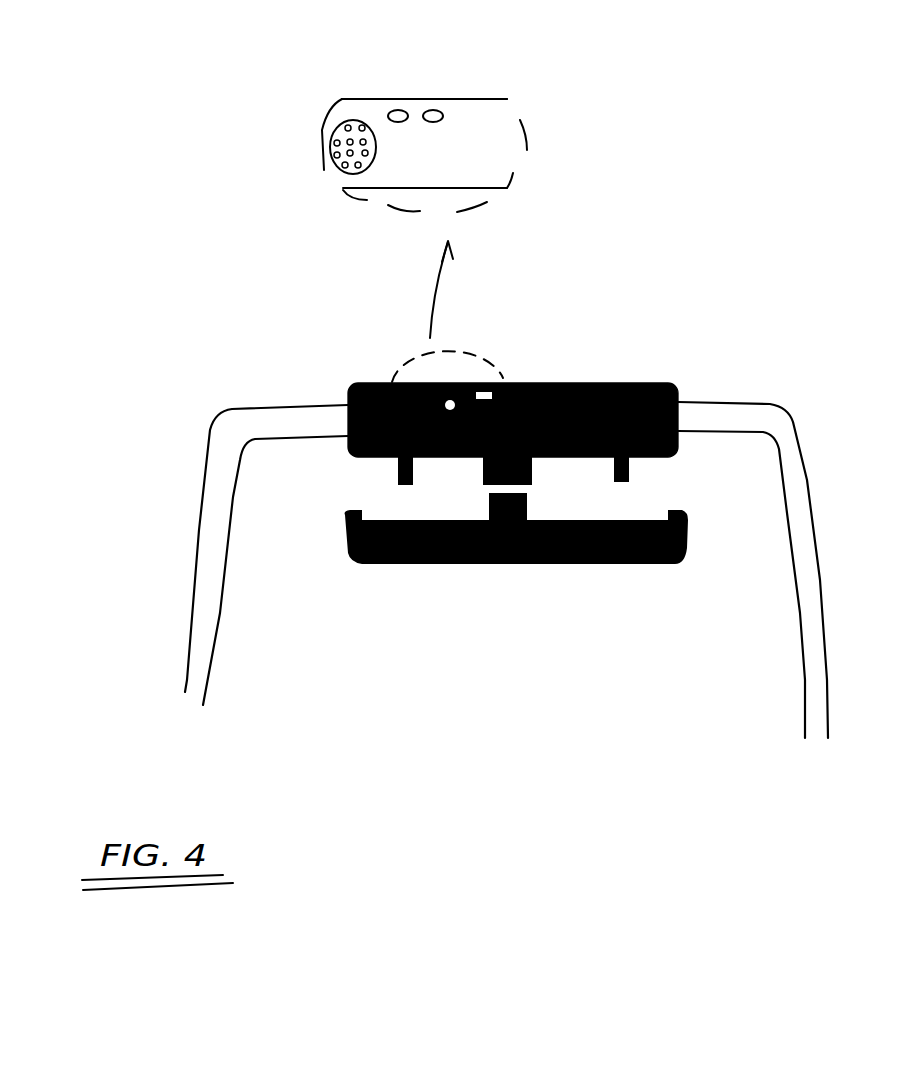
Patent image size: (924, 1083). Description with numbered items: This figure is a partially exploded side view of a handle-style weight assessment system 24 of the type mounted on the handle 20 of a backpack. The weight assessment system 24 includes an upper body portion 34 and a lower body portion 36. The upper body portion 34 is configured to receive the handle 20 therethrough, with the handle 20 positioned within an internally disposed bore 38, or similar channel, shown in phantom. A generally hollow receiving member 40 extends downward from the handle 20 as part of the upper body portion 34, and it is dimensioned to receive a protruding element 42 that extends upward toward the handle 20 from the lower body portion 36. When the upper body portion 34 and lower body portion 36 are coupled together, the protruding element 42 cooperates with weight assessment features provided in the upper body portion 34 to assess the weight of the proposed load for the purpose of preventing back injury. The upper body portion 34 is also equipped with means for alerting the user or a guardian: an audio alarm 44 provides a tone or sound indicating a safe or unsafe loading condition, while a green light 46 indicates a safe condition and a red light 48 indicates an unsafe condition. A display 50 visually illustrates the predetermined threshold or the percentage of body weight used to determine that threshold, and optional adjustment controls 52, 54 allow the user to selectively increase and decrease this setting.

The handle 20 is at (789, 448).
The weight assessment system 24 is at (633, 330).
The upper body portion 34 is at (507, 100).
The lower body portion 36 is at (685, 520).
The bore 38 is at (362, 383).
The receiving member 40 is at (532, 470).
The protruding element 42 is at (489, 503).
The audio alarm 44 is at (378, 147).
The green light 46 is at (394, 110).
The red light 48 is at (457, 67).
The display 50 is at (593, 385).
The adjustment control 52 is at (642, 385).
The adjustment control 54 is at (553, 387).